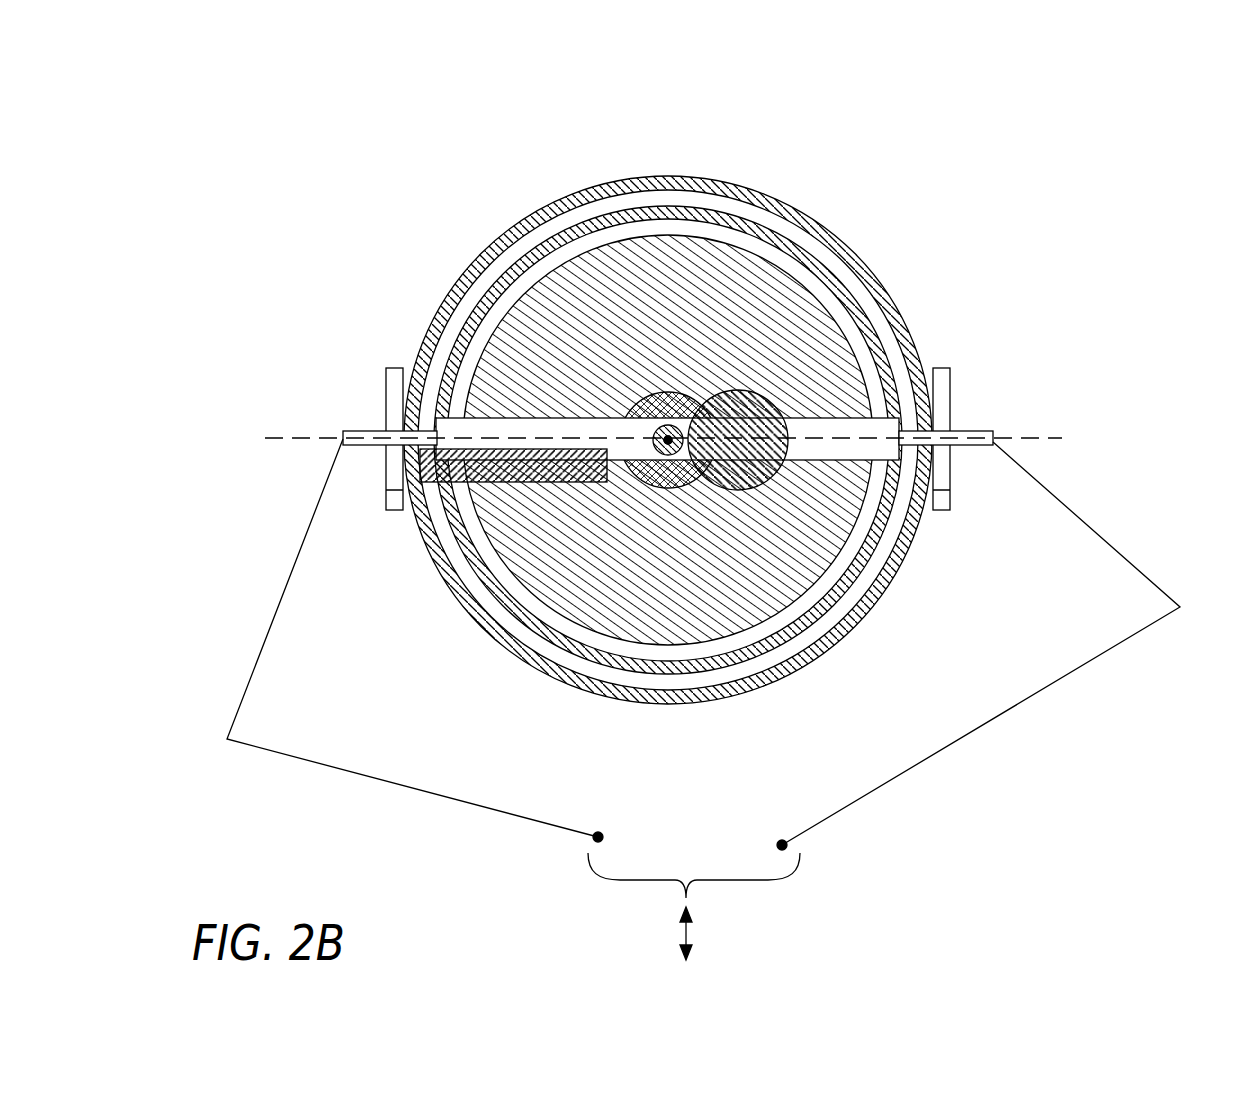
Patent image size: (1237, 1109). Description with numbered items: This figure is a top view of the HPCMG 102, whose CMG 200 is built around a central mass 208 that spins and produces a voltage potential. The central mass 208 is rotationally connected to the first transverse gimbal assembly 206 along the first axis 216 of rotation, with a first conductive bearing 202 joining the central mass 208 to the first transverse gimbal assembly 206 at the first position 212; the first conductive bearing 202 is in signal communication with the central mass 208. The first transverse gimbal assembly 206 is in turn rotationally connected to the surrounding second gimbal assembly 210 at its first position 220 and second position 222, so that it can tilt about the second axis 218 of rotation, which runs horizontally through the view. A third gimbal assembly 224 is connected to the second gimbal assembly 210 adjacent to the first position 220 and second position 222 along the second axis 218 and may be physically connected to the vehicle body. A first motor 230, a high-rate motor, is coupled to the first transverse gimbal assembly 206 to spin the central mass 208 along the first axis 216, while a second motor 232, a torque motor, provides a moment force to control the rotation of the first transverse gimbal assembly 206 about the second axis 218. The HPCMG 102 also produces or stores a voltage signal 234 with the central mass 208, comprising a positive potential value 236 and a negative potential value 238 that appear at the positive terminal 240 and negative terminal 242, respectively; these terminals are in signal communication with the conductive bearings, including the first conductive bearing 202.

The HPCMG 102 is at (1102, 155).
The CMG 200 is at (367, 278).
The first conductive bearing 202 is at (668, 440).
The first transverse gimbal assembly 206 is at (505, 275).
The central mass 208 is at (582, 342).
The second gimbal assembly 210 is at (570, 192).
The first position of the first transverse gimbal assembly 212 is at (668, 440).
The first axis of rotation 216 is at (670, 427).
The second axis of rotation 218 is at (664, 438).
The first position of the second gimbal assembly 220 is at (388, 440).
The second position of the second gimbal assembly 222 is at (948, 440).
The third gimbal assembly 224 is at (393, 492).
The first motor 230 is at (738, 417).
The second motor 232 is at (512, 467).
The voltage signal 234 is at (694, 922).
The positive potential value 236 is at (438, 640).
The negative potential value 238 is at (958, 646).
The positive terminal 240 is at (358, 430).
The negative terminal 242 is at (978, 432).